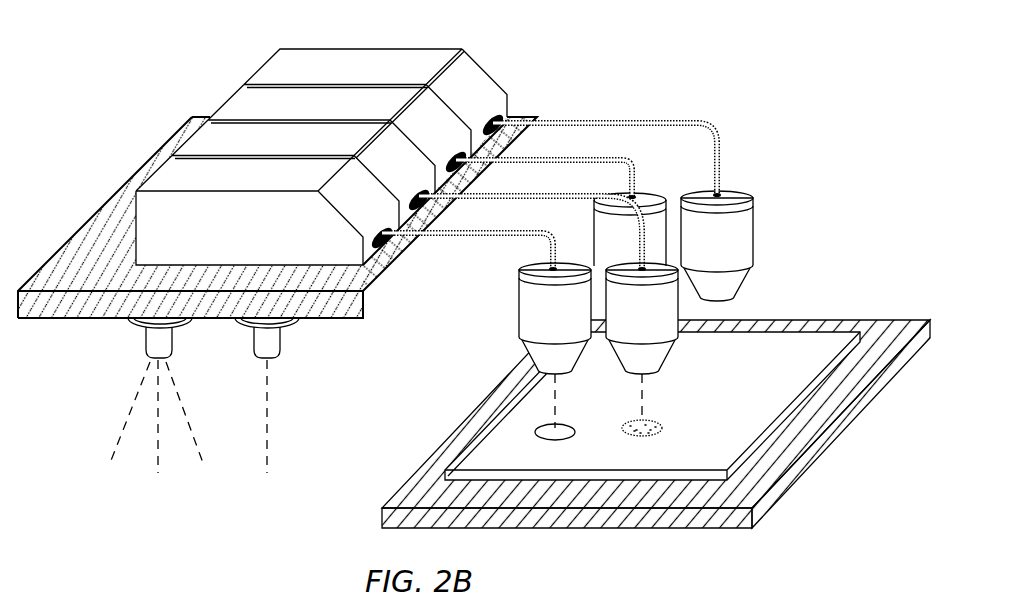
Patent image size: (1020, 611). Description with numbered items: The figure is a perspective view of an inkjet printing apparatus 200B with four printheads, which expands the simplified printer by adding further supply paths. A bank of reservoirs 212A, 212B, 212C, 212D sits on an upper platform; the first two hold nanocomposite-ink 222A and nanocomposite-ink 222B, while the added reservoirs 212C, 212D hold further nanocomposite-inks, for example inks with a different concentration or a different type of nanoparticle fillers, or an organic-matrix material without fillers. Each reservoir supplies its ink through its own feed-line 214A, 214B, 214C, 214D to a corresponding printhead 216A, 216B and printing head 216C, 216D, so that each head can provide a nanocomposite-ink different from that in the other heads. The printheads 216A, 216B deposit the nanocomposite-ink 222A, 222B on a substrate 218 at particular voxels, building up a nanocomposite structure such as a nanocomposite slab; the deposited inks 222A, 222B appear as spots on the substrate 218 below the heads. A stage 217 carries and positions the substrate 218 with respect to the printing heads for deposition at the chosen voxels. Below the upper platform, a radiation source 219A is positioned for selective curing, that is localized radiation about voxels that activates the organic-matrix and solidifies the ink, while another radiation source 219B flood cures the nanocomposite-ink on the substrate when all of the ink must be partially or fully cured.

The printing apparatus 200B is at (228, 506).
The reservoir 212A is at (148, 158).
The reservoir 212B is at (184, 118).
The reservoir 212C is at (222, 97).
The reservoir 212D is at (257, 67).
The feed-line 214A is at (463, 238).
The feed-line 214B is at (550, 194).
The feed-line 214C is at (582, 157).
The feed-line 214D is at (637, 122).
The printhead 216A is at (518, 340).
The printhead 216B is at (680, 313).
The printing head 216C is at (668, 243).
The printing head 216D is at (755, 252).
The stage 217 is at (778, 488).
The substrate 218 is at (470, 450).
The radiation source 219A is at (280, 343).
The radiation source 219B is at (148, 344).
The nanocomposite-ink 222A is at (522, 425).
The nanocomposite-ink 222B is at (674, 422).